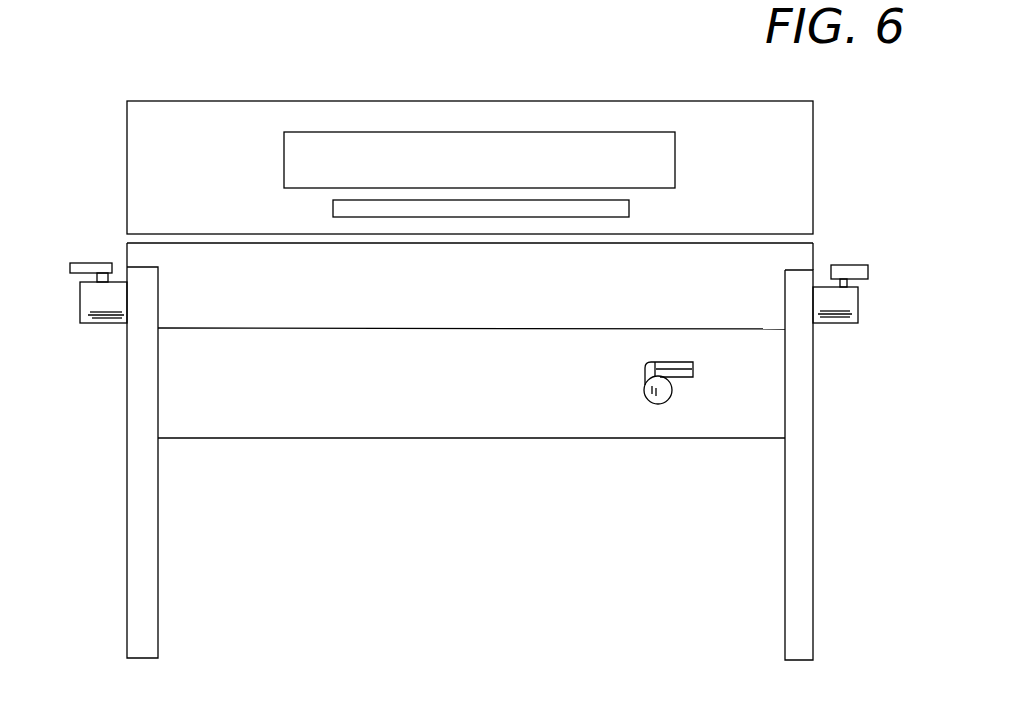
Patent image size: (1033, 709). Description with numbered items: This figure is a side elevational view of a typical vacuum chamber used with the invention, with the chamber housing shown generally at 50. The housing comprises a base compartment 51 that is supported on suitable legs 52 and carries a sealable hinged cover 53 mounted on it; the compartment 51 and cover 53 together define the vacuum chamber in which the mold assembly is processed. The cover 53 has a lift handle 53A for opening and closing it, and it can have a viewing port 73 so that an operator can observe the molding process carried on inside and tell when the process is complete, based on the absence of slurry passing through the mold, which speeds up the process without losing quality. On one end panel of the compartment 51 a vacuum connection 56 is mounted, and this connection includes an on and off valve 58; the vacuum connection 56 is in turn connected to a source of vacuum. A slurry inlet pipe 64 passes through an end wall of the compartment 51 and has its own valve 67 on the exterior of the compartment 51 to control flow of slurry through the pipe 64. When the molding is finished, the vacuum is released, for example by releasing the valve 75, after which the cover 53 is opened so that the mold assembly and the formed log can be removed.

The housing 50 is at (386, 420).
The base compartment 51 is at (530, 417).
The legs 52 is at (148, 577).
The sealable hinged cover 53 is at (788, 128).
The lift handle 53A is at (420, 203).
The vacuum connection 56 is at (837, 323).
The on and off valve 58 is at (845, 266).
The slurry inlet pipe 64 is at (110, 323).
The valve 67 is at (67, 262).
The viewing port 73 is at (540, 150).
The valve 75 is at (662, 402).